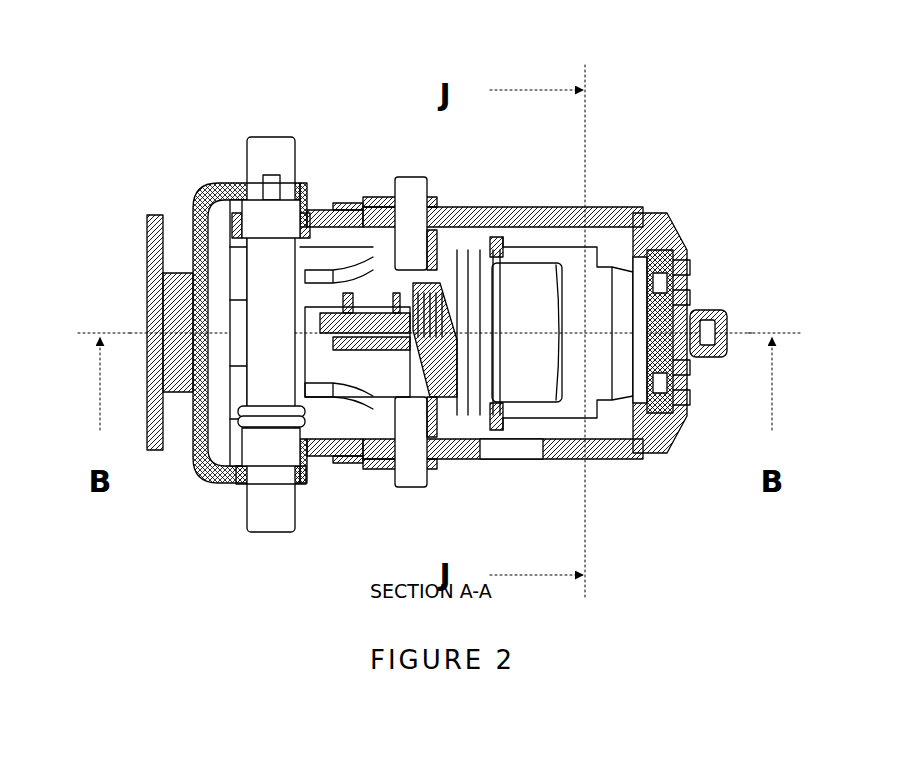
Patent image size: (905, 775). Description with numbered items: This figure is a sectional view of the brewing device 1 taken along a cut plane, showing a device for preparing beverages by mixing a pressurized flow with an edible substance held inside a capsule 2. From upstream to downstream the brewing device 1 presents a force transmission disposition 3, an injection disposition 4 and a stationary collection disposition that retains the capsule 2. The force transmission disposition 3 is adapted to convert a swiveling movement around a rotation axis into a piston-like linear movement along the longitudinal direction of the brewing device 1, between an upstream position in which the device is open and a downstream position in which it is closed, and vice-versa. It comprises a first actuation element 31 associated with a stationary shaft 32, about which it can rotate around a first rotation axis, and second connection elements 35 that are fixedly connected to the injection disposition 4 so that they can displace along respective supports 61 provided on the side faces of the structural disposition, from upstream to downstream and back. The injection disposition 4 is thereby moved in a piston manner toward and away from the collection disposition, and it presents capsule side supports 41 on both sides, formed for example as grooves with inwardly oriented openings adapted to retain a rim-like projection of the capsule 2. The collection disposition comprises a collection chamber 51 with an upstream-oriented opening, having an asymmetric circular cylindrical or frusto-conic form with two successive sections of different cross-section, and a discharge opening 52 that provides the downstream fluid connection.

The brewing device 1 is at (399, 295).
The capsule 2 is at (562, 333).
The force transmission disposition 3 is at (258, 297).
The injection disposition 4 is at (433, 281).
The first actuation element 31 is at (152, 332).
The stationary shaft 32 is at (270, 334).
The second connection elements 35 is at (410, 455).
The capsule side supports 41 is at (485, 430).
The collection chamber 51 is at (570, 241).
The discharge opening 52 is at (652, 326).
The supports 61 is at (475, 211).